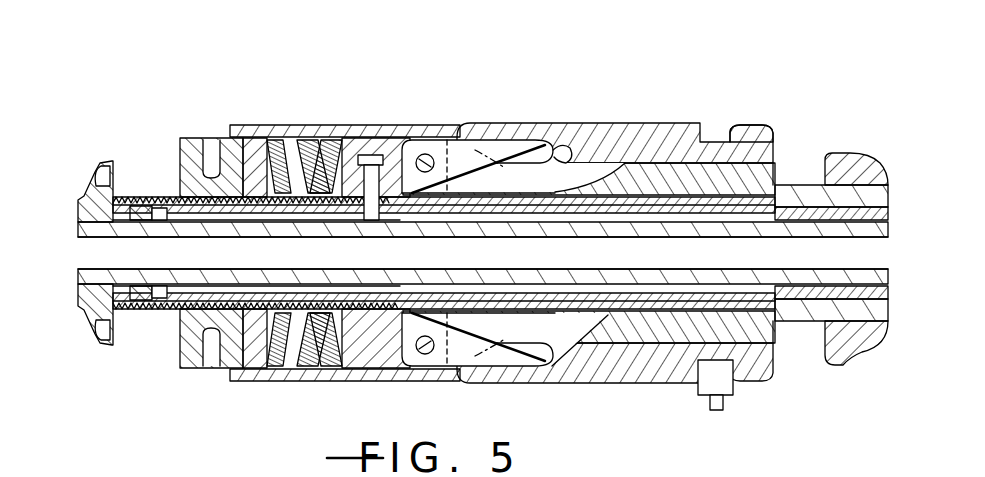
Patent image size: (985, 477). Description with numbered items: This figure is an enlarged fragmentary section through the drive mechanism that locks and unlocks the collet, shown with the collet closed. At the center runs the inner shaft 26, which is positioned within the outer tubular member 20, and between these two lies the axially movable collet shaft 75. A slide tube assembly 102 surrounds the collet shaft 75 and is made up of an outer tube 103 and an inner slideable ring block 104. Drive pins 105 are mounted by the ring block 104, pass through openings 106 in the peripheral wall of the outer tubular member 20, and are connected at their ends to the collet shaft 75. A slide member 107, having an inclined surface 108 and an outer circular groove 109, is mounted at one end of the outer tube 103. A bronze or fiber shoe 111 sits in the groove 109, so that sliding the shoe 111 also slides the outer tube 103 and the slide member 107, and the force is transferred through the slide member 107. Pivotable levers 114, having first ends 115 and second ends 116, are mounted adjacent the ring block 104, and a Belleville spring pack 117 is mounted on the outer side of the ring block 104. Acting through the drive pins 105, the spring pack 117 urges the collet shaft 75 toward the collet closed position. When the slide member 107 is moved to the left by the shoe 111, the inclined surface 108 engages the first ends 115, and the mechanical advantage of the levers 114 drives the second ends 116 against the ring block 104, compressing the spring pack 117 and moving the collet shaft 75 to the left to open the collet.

The outer tubular member 20 is at (800, 185).
The inner shaft 26 is at (879, 240).
The collet shaft 75 is at (462, 222).
The slide tube assembly 102 is at (436, 124).
The outer tube 103 is at (306, 134).
The ring block 104 is at (413, 139).
The drive pins 105 is at (424, 222).
The openings 106 is at (360, 222).
The slide member 107 is at (657, 128).
The inclined surface 108 is at (597, 130).
The outer circular groove 109 is at (733, 125).
The fiber shoe 111 is at (733, 394).
The pivotable levers 114 is at (497, 175).
The first ends 115 is at (512, 383).
The second ends 116 is at (398, 384).
The spring pack 117 is at (278, 135).